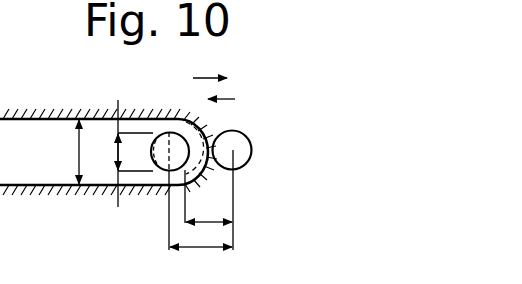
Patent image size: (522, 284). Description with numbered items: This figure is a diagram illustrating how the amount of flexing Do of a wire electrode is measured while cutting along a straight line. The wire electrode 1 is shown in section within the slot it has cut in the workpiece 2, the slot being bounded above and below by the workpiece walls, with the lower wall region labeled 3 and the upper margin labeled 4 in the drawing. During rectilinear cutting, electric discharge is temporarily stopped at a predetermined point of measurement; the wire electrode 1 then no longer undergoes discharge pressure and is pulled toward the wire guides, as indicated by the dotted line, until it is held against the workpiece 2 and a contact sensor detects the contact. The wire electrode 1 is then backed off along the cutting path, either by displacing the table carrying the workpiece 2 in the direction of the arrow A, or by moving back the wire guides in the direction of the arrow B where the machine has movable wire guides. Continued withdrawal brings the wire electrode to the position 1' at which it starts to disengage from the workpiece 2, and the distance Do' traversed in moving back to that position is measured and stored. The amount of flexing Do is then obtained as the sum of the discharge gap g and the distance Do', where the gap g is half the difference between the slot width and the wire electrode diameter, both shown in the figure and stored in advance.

The wire electrode 1 is at (169, 187).
The optical fiber in displaced position 1' is at (247, 135).
The workpiece 2 is at (28, 104).
The lower electrode plate 3 is at (37, 186).
The electrode plate (partially shown) 4 is at (4, 19).
The gap g is at (119, 134).
The arrow A is at (220, 80).
The arrow B is at (211, 101).
The amount of flexing Do is at (201, 259).
The back-off distance Do' is at (201, 200).